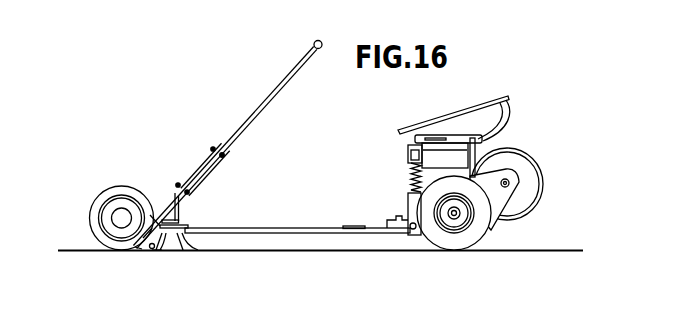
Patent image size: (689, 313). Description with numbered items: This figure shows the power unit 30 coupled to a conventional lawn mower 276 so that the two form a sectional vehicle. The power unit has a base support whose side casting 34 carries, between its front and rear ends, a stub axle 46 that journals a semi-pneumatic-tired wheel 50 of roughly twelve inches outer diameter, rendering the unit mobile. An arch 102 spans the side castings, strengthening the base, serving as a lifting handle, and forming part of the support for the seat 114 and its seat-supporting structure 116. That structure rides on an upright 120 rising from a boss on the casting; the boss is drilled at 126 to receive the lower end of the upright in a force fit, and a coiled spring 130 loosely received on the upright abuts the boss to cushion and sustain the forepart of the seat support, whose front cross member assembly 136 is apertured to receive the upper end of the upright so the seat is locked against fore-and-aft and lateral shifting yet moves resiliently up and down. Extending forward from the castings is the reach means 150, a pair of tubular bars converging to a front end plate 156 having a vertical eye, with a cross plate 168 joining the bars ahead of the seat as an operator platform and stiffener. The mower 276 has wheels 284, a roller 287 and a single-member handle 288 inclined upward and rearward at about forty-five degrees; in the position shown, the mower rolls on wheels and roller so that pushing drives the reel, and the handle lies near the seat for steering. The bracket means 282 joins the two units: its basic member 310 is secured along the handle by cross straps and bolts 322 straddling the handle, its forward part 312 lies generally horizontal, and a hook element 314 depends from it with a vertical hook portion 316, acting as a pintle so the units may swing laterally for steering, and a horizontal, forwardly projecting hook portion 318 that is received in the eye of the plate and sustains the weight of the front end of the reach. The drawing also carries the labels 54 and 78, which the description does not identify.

The power unit 30 is at (459, 181).
The side casting 34 is at (513, 198).
The stub axle 46 is at (452, 216).
The wheel 50 is at (465, 247).
The lever 54 is at (453, 160).
The drive wheel 78 is at (530, 153).
The arch 102 is at (481, 140).
The seat 114 is at (451, 114).
The seat-supporting structure 116 is at (403, 136).
The upright 120 is at (409, 157).
The drilled hole 126 is at (408, 201).
The coiled spring 130 is at (410, 176).
The cross member assembly 136 is at (408, 150).
The reach means 150 is at (289, 213).
The front end plate 156 is at (198, 251).
The cross plate 168 is at (350, 226).
The lawn mower 276 is at (101, 198).
The bracket means 282 is at (192, 161).
The wheels 284 is at (89, 217).
The roller 287 is at (151, 249).
The handle 288 is at (282, 79).
The basic member 310 is at (203, 169).
The forward part 312 is at (179, 210).
The hook element 314 is at (182, 250).
The hook portion 316 is at (144, 247).
The hook portion 318 is at (157, 251).
The bolts 322 is at (225, 155).